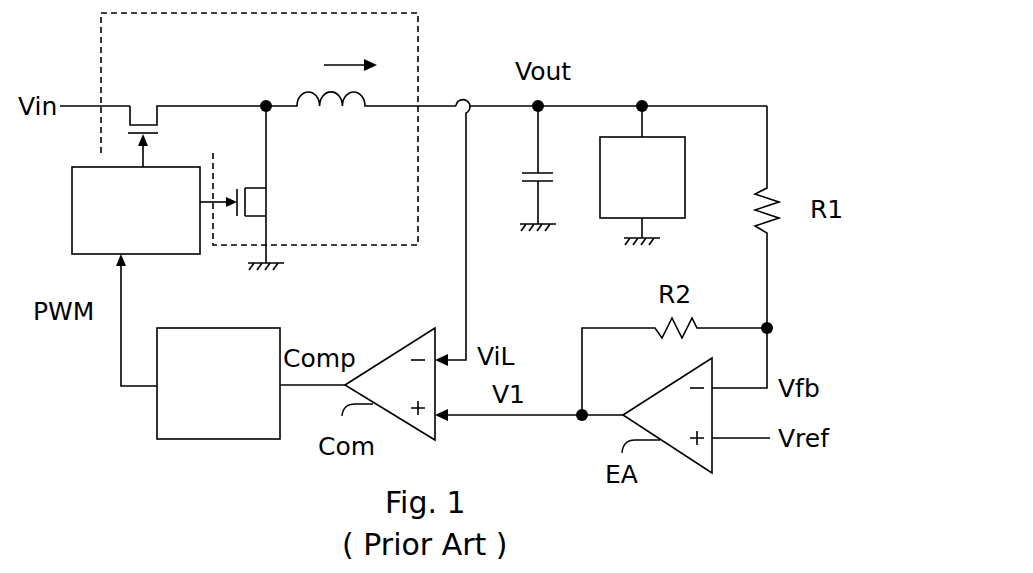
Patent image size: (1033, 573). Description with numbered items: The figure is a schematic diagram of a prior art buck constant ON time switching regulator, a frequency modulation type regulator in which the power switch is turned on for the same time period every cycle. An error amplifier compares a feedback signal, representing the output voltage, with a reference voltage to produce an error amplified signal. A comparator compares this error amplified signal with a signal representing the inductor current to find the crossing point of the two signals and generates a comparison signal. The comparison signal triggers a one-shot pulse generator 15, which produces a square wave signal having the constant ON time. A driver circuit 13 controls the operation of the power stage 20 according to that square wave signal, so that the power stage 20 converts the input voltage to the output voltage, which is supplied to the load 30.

The driver circuit 13 is at (154, 210).
The one-shot pulse generator 15 is at (218, 383).
The power stage 20 is at (278, 141).
The load 30 is at (642, 175).